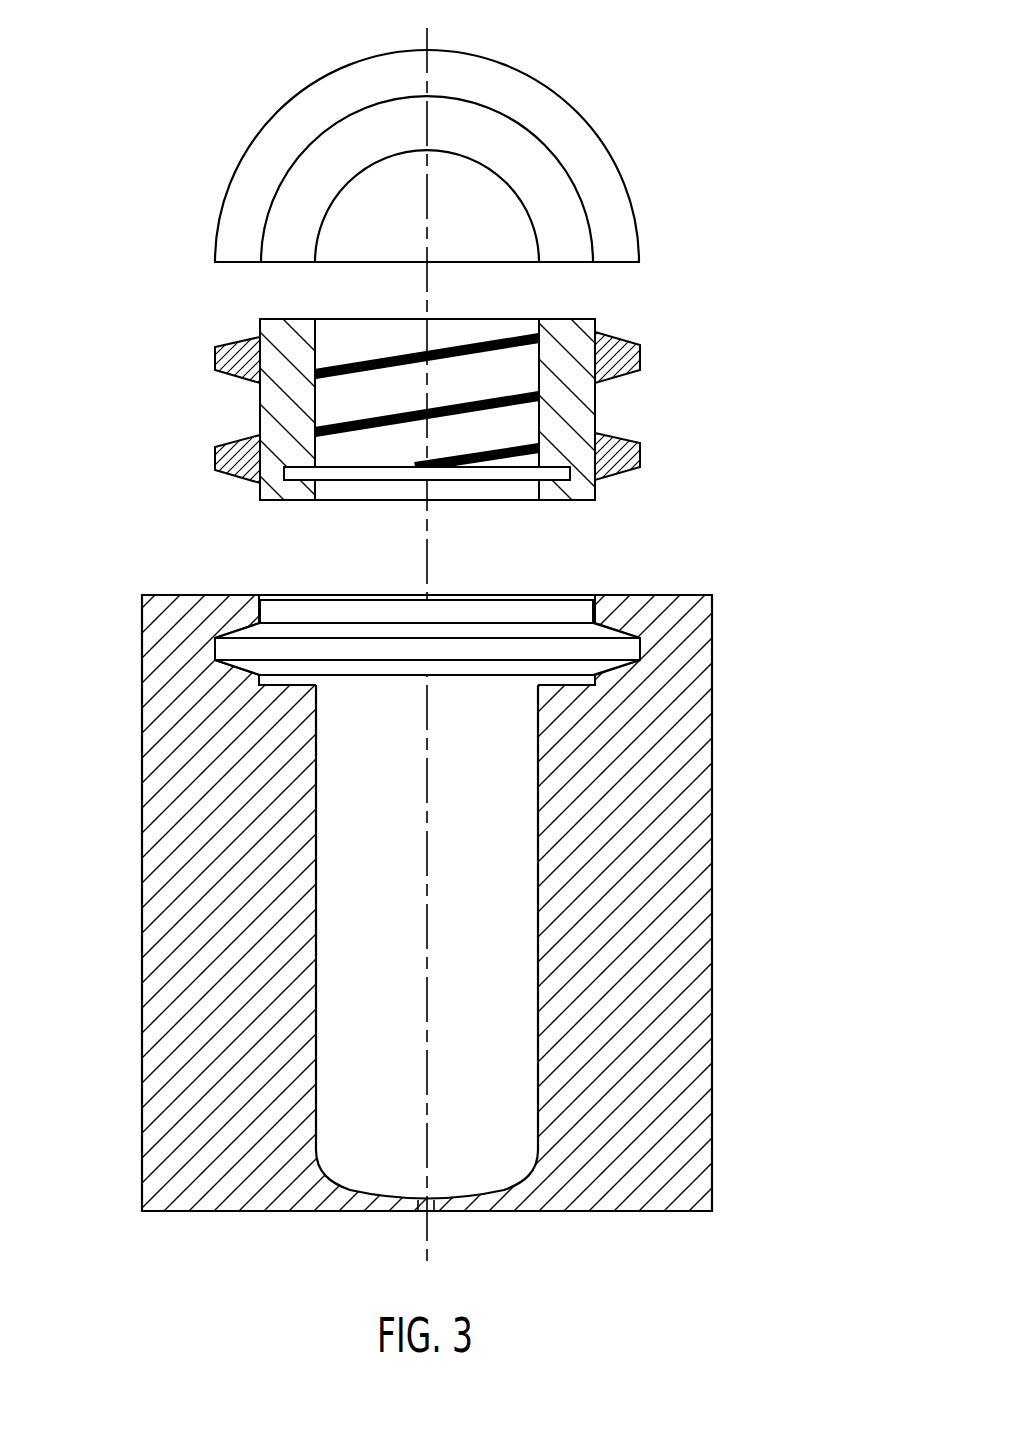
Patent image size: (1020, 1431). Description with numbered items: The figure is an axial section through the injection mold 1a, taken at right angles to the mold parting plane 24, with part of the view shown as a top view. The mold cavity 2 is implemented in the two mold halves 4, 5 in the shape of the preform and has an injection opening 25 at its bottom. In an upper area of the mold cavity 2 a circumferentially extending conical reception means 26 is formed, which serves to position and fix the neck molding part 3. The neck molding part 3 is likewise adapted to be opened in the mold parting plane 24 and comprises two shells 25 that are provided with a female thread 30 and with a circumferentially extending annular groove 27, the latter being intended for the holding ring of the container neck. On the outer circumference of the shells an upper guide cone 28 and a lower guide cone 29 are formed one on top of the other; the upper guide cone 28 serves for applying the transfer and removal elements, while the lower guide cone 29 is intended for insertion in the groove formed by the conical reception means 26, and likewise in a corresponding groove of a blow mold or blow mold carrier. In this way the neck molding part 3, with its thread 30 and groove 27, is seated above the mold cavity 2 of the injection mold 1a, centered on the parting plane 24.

The injection mold 1a is at (444, 903).
The mold cavity 2 is at (333, 915).
The neck molding part 3 is at (393, 785).
The mold half 4 is at (163, 875).
The mold half 5 is at (697, 645).
The mold parting plane 24 is at (427, 118).
The injection opening 25 is at (563, 348).
The conical reception means 26 is at (360, 676).
The annular groove 27 is at (303, 482).
The upper guide cone 28 is at (596, 148).
The lower guide cone 29 is at (215, 458).
The female thread 30 is at (350, 366).